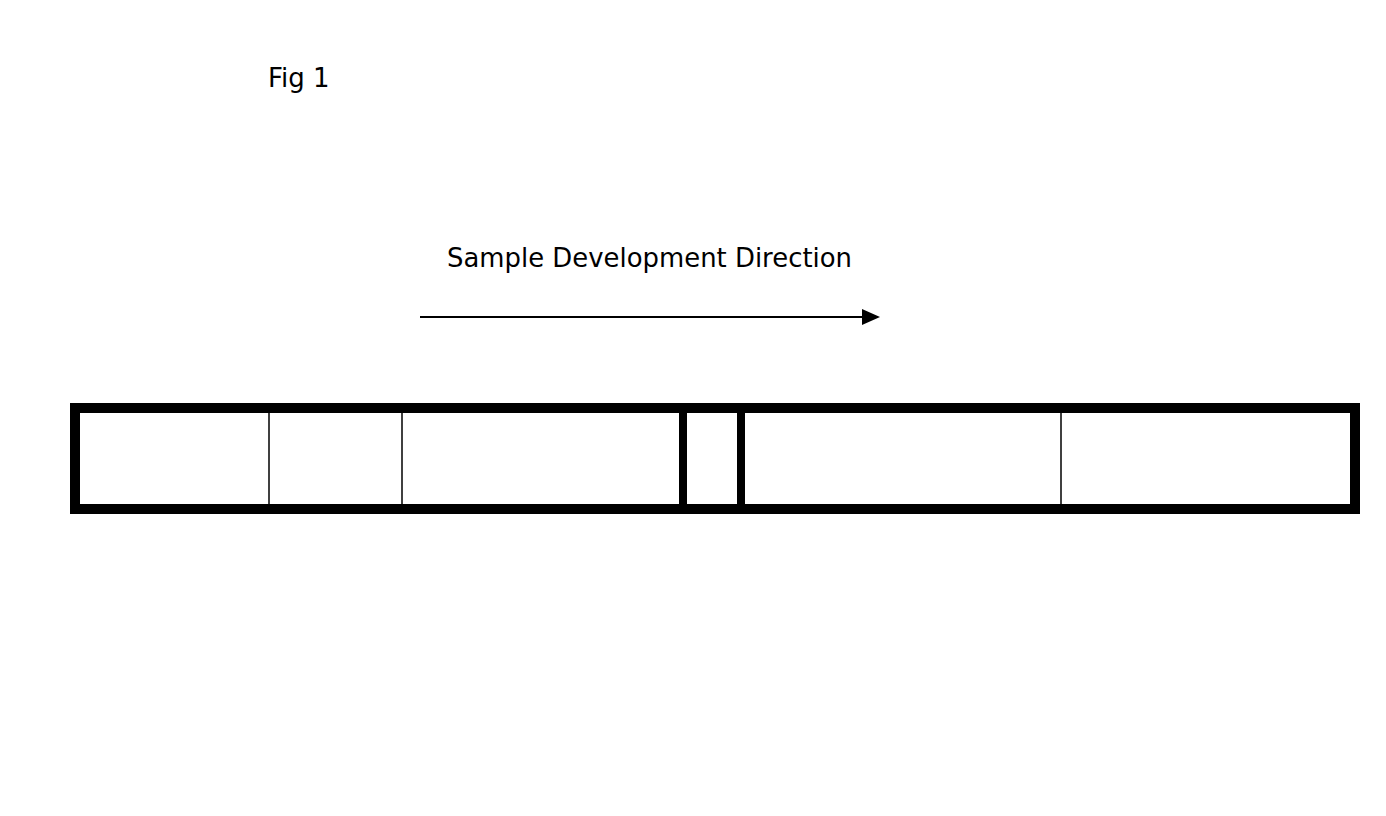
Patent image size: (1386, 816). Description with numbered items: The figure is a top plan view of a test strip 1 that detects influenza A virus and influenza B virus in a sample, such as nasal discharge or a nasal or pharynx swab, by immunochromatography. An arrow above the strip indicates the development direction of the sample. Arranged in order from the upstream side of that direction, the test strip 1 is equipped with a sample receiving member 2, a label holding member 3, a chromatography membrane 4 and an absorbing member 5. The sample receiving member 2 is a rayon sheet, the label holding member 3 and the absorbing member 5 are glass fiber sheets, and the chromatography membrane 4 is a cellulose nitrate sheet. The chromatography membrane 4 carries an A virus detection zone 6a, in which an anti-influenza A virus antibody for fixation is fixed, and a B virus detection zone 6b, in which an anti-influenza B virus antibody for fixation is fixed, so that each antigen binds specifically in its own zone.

The test strip 1 is at (1063, 323).
The sample receiving member 2 is at (172, 483).
The label holding member 3 is at (333, 483).
The chromatography membrane 4 is at (553, 483).
The absorbing member 5 is at (1140, 492).
The A virus detection zone 6a is at (682, 512).
The B virus detection zone 6b is at (738, 512).